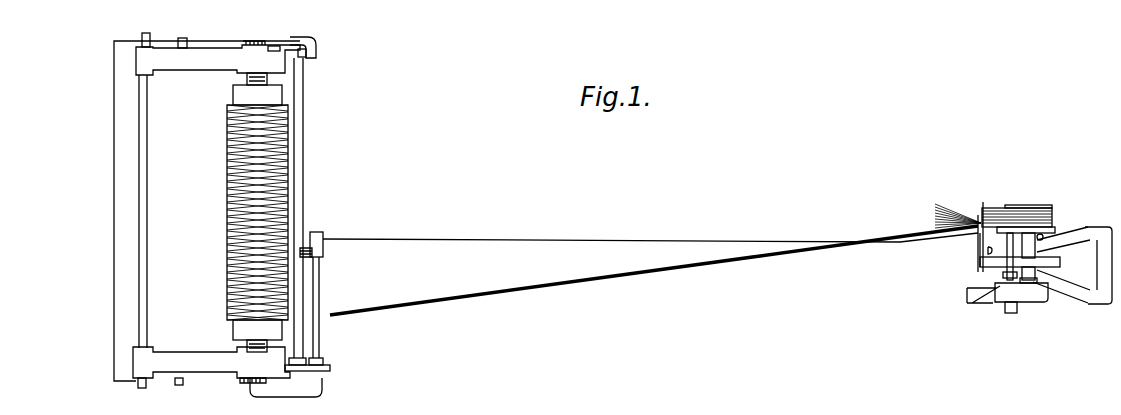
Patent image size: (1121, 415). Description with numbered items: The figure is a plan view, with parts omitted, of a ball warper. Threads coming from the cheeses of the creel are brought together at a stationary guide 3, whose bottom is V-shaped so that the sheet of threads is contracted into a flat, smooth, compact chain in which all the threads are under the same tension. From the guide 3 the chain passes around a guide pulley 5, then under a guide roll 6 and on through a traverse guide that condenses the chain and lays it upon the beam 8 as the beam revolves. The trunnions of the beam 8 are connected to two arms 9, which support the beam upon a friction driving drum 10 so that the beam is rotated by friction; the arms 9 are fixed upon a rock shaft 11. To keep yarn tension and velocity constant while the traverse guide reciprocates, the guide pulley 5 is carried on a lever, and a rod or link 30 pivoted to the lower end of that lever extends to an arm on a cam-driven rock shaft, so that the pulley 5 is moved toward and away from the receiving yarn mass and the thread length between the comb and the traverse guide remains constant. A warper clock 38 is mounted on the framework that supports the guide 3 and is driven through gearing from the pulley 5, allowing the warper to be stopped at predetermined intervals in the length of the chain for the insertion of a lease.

The stationary guide 3 is at (979, 211).
The guide pulley 5 is at (1031, 210).
The guide roll 6 is at (296, 197).
The beam 8 is at (235, 97).
The arms 9 is at (181, 62).
The friction driving drum 10 is at (158, 204).
The rock shaft 11 is at (142, 258).
The rod or link 30 is at (634, 241).
The warper clock 38 is at (1025, 305).